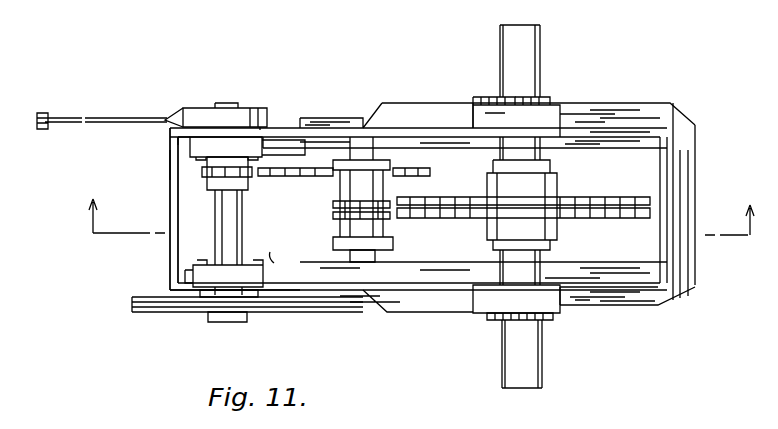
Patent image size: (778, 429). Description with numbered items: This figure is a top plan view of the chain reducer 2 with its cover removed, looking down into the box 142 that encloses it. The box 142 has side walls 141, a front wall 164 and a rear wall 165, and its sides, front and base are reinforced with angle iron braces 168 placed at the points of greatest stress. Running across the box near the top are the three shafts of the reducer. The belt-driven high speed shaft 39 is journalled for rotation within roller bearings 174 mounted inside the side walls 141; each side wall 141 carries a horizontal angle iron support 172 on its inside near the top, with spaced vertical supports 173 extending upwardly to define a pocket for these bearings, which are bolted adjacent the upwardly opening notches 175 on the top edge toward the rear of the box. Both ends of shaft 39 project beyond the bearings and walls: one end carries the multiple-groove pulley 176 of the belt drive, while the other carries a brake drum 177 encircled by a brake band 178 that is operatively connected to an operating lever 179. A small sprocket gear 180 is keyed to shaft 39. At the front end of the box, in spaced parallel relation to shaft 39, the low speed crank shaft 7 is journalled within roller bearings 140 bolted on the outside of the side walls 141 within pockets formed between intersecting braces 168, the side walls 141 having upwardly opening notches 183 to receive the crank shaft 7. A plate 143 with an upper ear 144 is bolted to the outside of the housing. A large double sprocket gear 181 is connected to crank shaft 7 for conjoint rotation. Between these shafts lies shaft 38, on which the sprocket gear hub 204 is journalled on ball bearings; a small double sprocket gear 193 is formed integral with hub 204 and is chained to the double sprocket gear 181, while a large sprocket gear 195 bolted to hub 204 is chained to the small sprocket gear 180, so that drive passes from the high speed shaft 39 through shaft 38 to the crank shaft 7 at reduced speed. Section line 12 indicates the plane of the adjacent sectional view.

The chain reducer 2 is at (637, 95).
The crank shaft 7 is at (536, 40).
The section line 12 is at (421, 223).
The shaft 38 is at (378, 258).
The high speed shaft 39 is at (222, 208).
The roller bearings 140 is at (485, 116).
The side walls 141 is at (400, 128).
The box 142 is at (172, 239).
The plate 143 is at (543, 96).
The upper ear 144 is at (483, 97).
The front wall 164 is at (678, 170).
The rear wall 165 is at (172, 166).
The angle iron braces 168 is at (603, 104).
The horizontal angle iron support 172 is at (613, 142).
The vertical supports 173 is at (180, 141).
The high speed shaft bearings 174 is at (221, 145).
The notches 175 is at (245, 292).
The multiple-groove pulley 176 is at (150, 313).
The brake drum 177 is at (201, 108).
The brake band 178 is at (178, 115).
The operating lever 179 is at (44, 113).
The small sprocket gear 180 is at (205, 175).
The large double sprocket gear 181 is at (573, 218).
The notches 183 is at (497, 283).
The small double sprocket gear 193 is at (333, 207).
The large sprocket gear 195 is at (280, 178).
The sprocket gear hub 204 is at (345, 228).